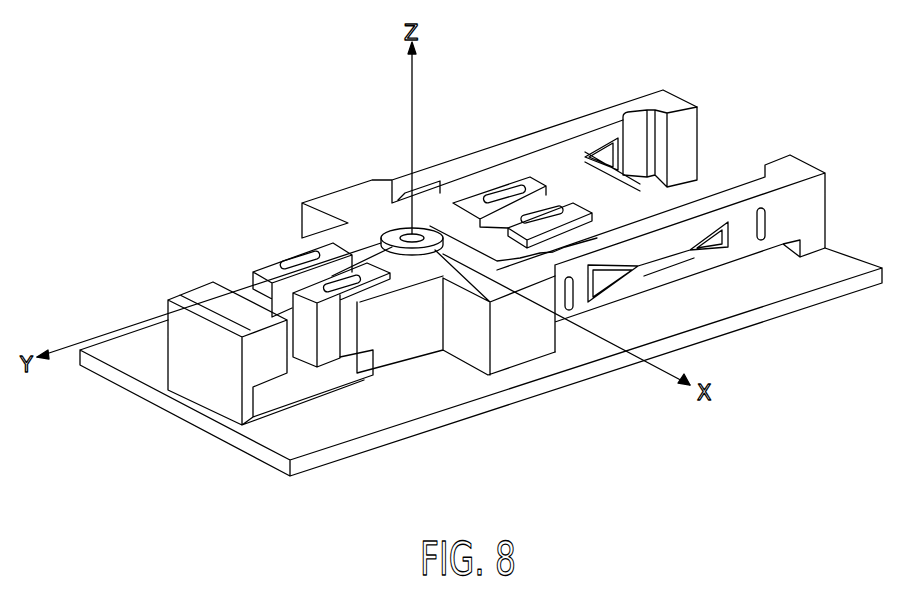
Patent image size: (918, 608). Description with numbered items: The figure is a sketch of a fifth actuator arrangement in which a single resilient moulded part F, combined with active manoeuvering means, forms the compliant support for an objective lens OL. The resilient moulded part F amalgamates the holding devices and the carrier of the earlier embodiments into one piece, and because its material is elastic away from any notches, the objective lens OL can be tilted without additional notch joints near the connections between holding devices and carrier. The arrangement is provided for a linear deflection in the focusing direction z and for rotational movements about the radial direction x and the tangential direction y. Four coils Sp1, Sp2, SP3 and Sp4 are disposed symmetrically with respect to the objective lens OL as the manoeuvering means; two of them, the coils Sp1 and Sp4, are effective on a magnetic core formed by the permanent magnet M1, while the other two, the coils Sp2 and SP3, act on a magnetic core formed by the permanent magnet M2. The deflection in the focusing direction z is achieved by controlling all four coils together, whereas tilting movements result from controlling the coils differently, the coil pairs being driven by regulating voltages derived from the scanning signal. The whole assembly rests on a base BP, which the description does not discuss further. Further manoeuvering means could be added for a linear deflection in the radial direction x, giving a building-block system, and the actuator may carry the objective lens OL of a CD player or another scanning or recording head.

The base plate BP is at (467, 387).
The resilient moulded part F is at (332, 202).
The permanent magnet M1 is at (597, 172).
The permanent magnet M2 is at (272, 365).
The coil Sp1 is at (567, 202).
The coil Sp2 is at (327, 340).
The coil SP3 is at (260, 263).
The coil Sp4 is at (532, 183).
The objective lens OL is at (393, 232).